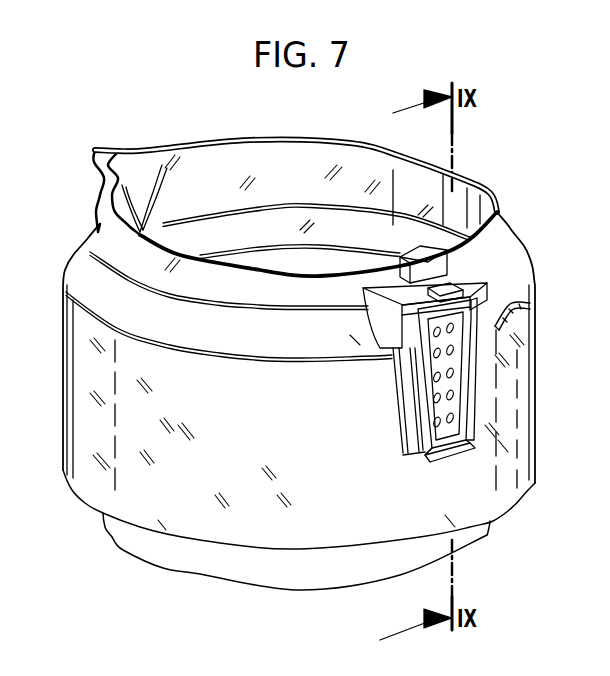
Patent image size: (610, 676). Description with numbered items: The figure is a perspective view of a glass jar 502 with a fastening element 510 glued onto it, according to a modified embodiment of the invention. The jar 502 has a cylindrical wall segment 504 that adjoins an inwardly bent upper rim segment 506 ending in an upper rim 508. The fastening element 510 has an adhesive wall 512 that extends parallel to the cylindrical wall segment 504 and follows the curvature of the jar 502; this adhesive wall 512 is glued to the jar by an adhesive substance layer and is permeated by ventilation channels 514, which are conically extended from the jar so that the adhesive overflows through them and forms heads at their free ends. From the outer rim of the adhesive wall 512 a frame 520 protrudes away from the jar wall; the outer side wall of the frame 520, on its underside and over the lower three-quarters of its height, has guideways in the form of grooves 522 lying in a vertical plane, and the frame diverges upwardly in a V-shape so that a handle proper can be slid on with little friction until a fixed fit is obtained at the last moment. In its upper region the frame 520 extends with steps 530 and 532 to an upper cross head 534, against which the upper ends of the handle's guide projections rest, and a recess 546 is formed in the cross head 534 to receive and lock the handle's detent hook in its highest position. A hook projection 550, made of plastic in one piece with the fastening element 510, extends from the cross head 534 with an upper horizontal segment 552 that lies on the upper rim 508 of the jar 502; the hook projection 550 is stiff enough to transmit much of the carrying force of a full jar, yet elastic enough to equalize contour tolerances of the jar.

The jar 502 is at (240, 136).
The cylindrical wall segment 504 is at (257, 530).
The upper rim segment 506 is at (355, 157).
The upper rim 508 is at (265, 264).
The fastening element 510 is at (446, 350).
The adhesive wall 512 is at (432, 422).
The ventilation channels 514 is at (454, 328).
The frame 520 is at (468, 440).
The grooves 522 is at (390, 427).
The step 530 is at (390, 352).
The step 532 is at (525, 312).
The cross head 534 is at (383, 313).
The recess 546 is at (460, 284).
The hook projection 550 is at (418, 243).
The horizontal segment 552 is at (398, 254).